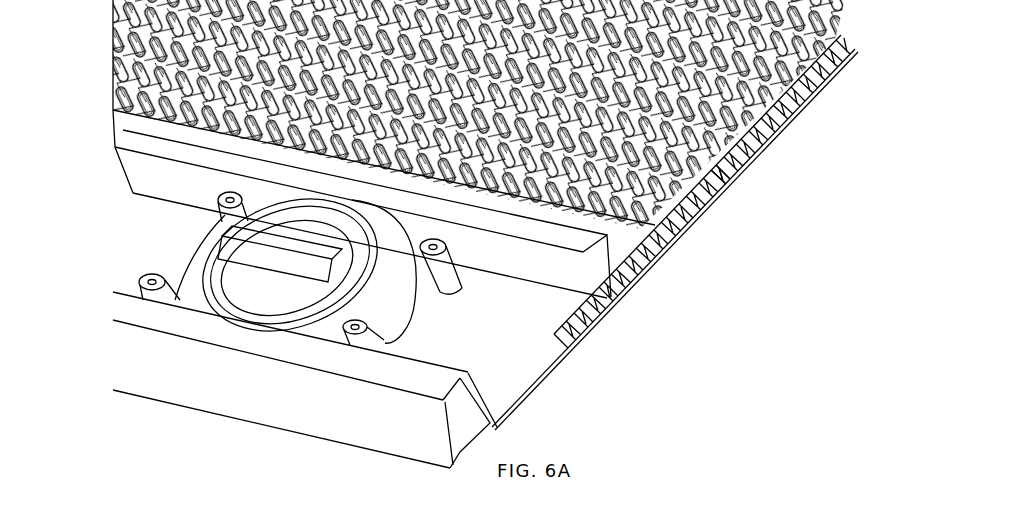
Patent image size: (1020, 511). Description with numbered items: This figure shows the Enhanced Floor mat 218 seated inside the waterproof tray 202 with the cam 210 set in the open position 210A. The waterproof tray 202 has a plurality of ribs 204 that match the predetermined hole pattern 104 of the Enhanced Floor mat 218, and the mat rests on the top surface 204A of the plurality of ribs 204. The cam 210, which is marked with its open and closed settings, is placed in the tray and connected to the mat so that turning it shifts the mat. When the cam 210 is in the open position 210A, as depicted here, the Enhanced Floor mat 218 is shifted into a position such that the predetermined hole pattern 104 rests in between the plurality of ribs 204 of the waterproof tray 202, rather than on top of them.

The Enhanced Floor mat 218 is at (250, 47).
The waterproof tray 202 is at (217, 368).
The cam 210 is at (300, 242).
The open position 210A is at (352, 236).
The top surface 204A is at (715, 173).
The predetermined hole pattern 104 is at (685, 190).
The plurality of ribs 204 is at (685, 217).